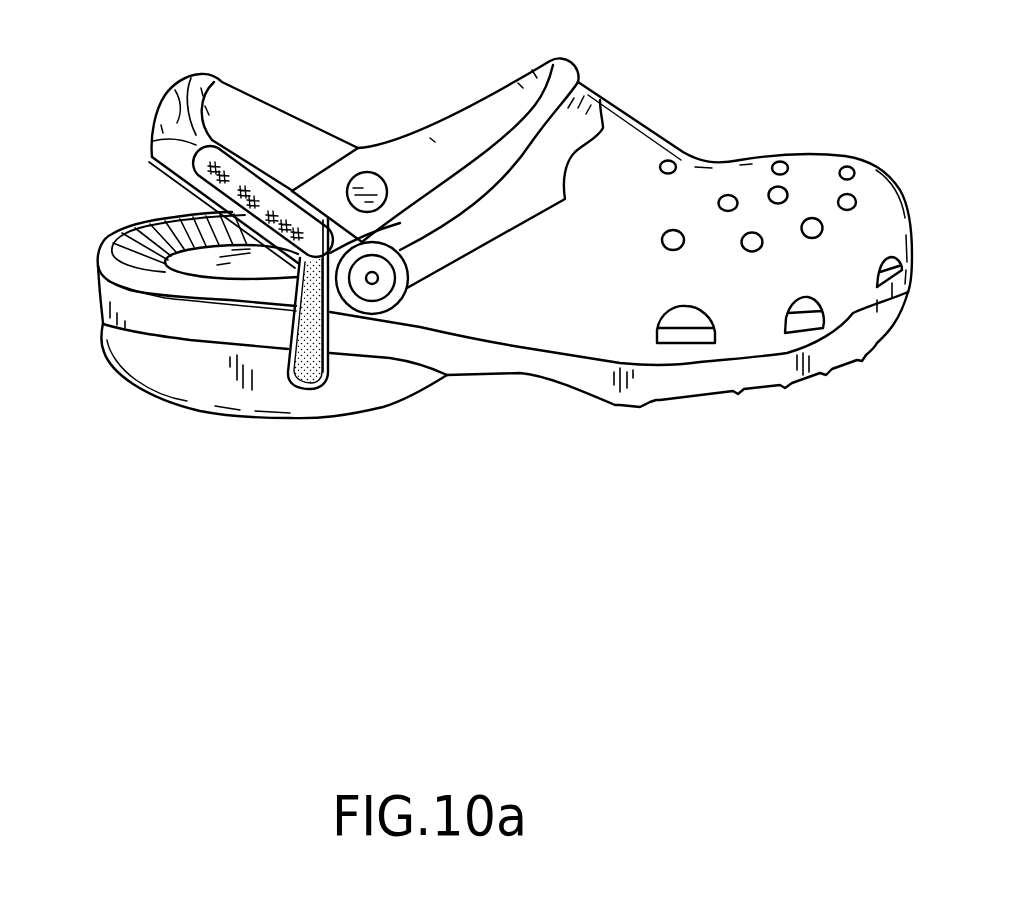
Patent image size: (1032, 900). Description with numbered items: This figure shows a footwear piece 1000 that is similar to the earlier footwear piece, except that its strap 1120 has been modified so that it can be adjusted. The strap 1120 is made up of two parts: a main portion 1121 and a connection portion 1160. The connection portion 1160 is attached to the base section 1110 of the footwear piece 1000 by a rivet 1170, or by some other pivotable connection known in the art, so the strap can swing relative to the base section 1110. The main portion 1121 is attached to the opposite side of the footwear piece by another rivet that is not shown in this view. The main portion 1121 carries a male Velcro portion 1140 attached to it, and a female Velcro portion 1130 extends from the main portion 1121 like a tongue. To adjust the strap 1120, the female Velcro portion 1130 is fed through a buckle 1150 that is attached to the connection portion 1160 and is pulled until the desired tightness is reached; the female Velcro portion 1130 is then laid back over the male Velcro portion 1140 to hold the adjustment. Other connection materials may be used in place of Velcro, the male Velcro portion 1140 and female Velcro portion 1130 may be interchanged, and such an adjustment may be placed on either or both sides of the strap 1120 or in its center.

The footwear piece 1000 is at (146, 455).
The base section 1110 is at (683, 152).
The strap 1120 is at (172, 108).
The main portion 1121 is at (162, 157).
The female Velcro portion 1130 is at (330, 372).
The male Velcro portion 1140 is at (245, 170).
The buckle 1150 is at (325, 215).
The connection portion 1160 is at (390, 238).
The rivet 1170 is at (383, 284).